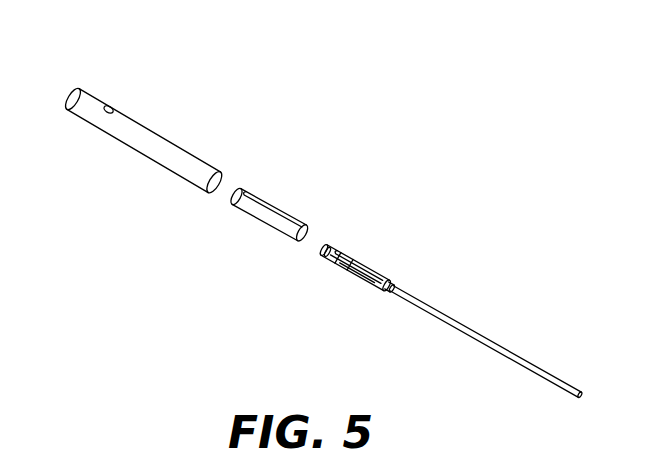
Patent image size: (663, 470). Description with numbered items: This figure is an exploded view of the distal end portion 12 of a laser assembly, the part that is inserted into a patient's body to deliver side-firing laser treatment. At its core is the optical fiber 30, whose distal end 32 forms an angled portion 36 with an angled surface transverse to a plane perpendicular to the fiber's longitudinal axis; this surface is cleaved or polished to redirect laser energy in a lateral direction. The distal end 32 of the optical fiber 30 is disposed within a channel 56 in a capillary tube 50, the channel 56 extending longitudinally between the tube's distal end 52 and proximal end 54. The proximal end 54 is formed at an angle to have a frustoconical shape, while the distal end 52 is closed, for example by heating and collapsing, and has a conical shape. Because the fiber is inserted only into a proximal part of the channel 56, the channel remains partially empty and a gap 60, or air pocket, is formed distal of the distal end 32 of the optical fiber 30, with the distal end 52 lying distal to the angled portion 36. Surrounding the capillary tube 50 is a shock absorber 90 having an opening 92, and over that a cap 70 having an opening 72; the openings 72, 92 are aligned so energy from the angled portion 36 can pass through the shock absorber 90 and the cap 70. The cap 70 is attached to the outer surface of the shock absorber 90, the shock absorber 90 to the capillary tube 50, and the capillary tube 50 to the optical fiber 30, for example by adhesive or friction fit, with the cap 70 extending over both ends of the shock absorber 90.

The distal end portion 12 is at (392, 125).
The optical fiber 30 is at (413, 292).
The distal end 32 is at (344, 272).
The angled portion 36 is at (351, 265).
The capillary tube 50 is at (366, 261).
The distal end 52 is at (322, 249).
The proximal end 54 is at (397, 293).
The channel 56 is at (342, 266).
The gap 60 is at (334, 259).
The cap 70 is at (145, 132).
The opening 72 is at (103, 112).
The shock absorber 90 is at (263, 194).
The opening 92 is at (233, 205).